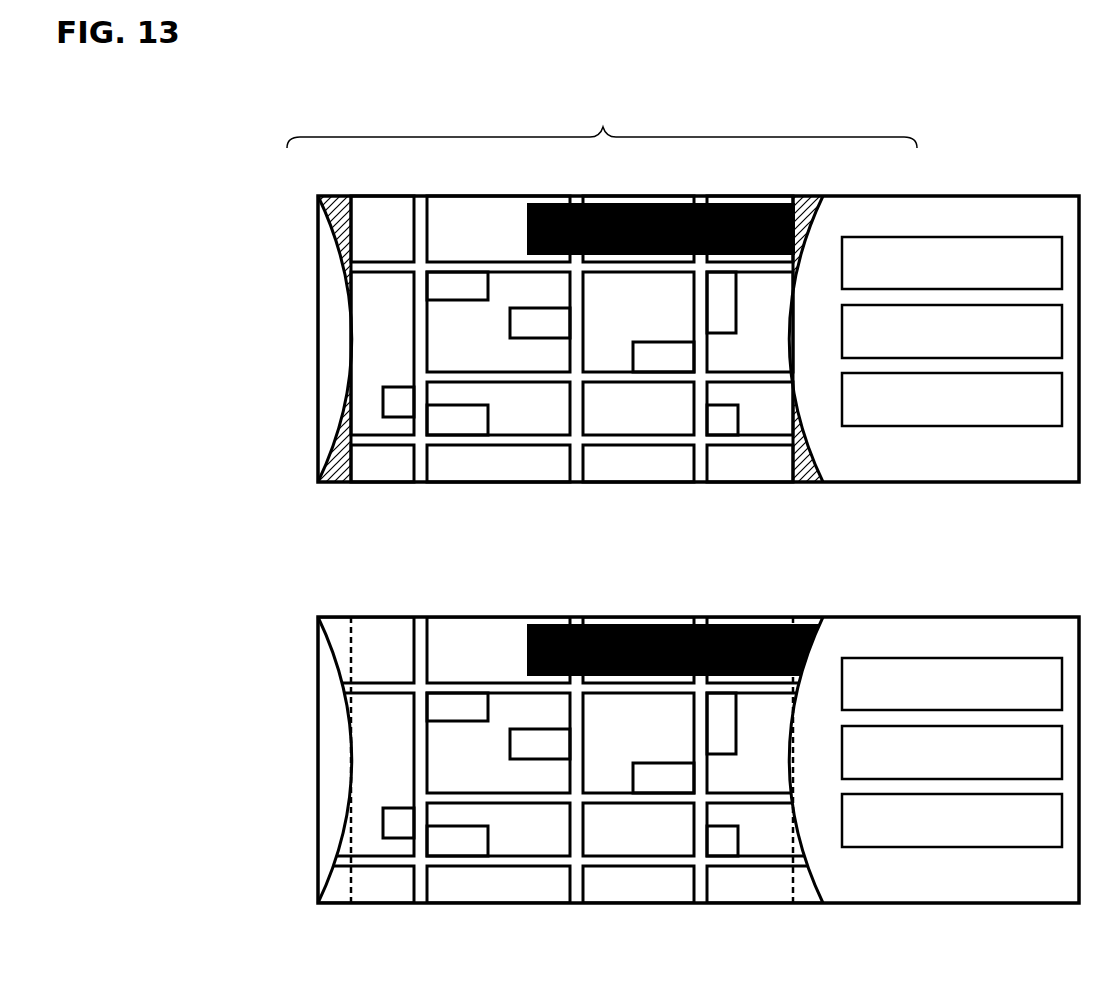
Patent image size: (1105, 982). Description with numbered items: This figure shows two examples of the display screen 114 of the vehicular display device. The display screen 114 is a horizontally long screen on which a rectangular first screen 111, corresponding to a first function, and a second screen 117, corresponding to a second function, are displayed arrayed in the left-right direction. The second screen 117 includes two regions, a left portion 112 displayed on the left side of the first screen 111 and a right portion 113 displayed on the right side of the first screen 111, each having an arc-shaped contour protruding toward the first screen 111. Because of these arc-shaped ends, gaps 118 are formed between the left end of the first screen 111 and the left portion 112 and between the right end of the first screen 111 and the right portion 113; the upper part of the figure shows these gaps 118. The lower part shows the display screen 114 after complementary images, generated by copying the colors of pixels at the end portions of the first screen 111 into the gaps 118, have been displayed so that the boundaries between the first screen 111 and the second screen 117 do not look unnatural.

The first screen 111 is at (459, 632).
The left portion 112 is at (318, 234).
The right portion 113 is at (887, 202).
The display screen 114 is at (1022, 483).
The second screen 117 is at (602, 119).
The gaps 118 is at (343, 196).